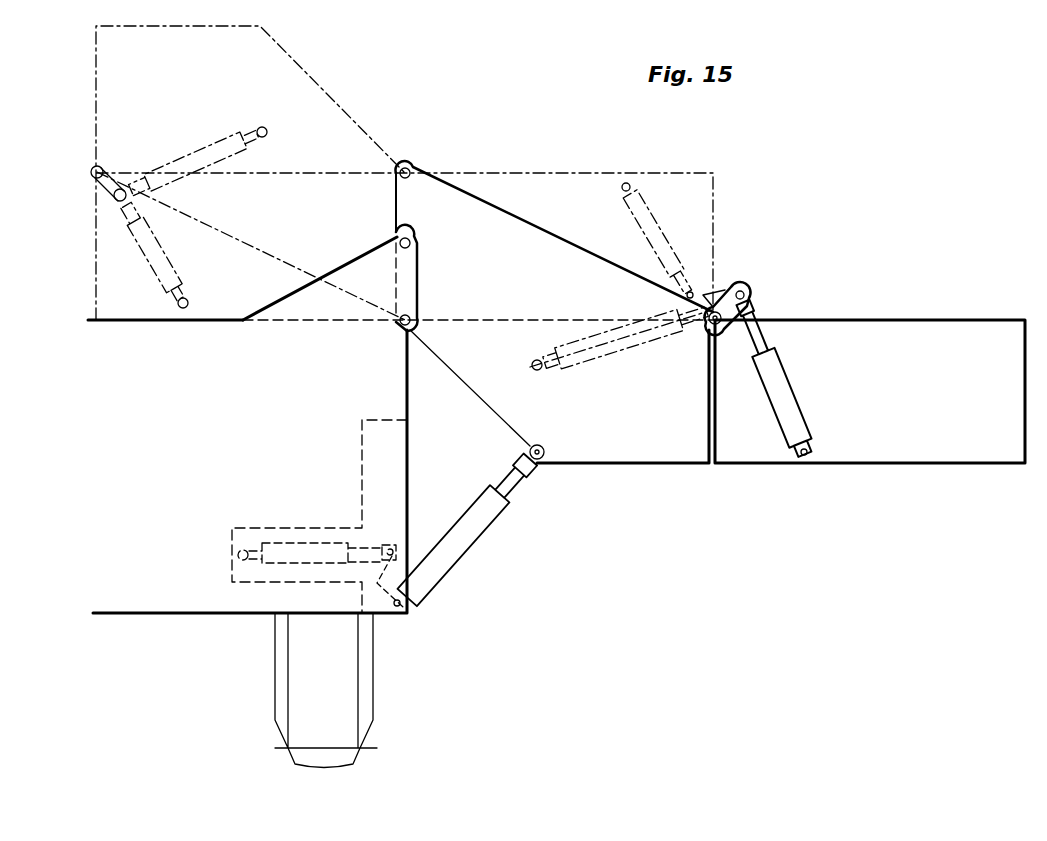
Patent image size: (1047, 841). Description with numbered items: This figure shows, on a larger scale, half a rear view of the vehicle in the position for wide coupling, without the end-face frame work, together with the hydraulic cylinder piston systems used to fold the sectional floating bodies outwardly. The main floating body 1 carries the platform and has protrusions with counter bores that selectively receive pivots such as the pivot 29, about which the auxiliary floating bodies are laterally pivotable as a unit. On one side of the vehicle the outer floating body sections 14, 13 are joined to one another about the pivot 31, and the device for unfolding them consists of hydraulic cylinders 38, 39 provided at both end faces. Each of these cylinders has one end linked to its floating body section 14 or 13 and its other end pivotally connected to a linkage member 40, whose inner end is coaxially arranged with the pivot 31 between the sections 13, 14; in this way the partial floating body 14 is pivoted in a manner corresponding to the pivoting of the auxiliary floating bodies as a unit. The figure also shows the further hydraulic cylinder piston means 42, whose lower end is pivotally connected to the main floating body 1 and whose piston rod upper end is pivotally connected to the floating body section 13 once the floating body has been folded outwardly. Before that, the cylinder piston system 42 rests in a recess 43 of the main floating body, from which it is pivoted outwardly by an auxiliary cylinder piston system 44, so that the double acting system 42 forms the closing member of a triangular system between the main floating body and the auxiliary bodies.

The main floating body 1 is at (141, 612).
The floating body section 13 is at (641, 458).
The floating body section 14 is at (538, 176).
The pivot 29 is at (421, 244).
The pivot 31 is at (712, 328).
The hydraulic cylinder 38 is at (786, 394).
The hydraulic cylinder 39 is at (630, 350).
The linkage member 40 is at (737, 312).
The hydraulic cylinder piston means 42 is at (474, 528).
The recess 43 is at (361, 462).
The auxiliary cylinder piston system 44 is at (287, 546).